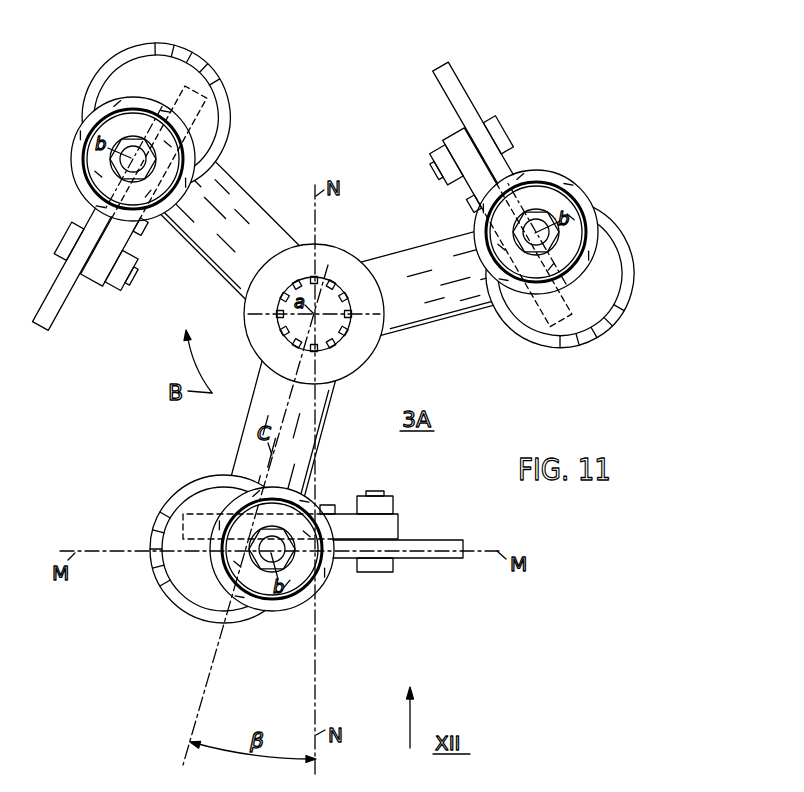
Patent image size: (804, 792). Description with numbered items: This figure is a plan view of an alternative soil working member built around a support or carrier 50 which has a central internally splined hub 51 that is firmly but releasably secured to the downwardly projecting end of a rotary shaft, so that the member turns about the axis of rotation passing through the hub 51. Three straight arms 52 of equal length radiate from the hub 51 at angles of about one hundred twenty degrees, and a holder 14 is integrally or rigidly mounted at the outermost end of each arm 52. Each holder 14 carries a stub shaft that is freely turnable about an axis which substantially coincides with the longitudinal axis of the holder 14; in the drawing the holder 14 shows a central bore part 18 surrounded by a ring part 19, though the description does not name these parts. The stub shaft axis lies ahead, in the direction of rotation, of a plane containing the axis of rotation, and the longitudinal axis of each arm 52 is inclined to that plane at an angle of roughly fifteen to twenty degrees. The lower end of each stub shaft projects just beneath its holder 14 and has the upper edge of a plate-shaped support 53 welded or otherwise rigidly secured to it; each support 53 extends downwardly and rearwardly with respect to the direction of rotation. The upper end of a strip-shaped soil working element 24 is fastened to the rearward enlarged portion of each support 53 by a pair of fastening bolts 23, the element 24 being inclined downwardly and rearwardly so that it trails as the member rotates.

The holder 14 is at (107, 66).
The axle bolt / hub nut 18 is at (306, 380).
The bearing ring 19 is at (93, 178).
The fastening bolt 23 is at (293, 344).
The soil working element 24 is at (52, 326).
The support or carrier 50 is at (357, 230).
The internally splined hub 51 is at (369, 360).
The arm 52 is at (336, 336).
The support plate 53 is at (86, 284).